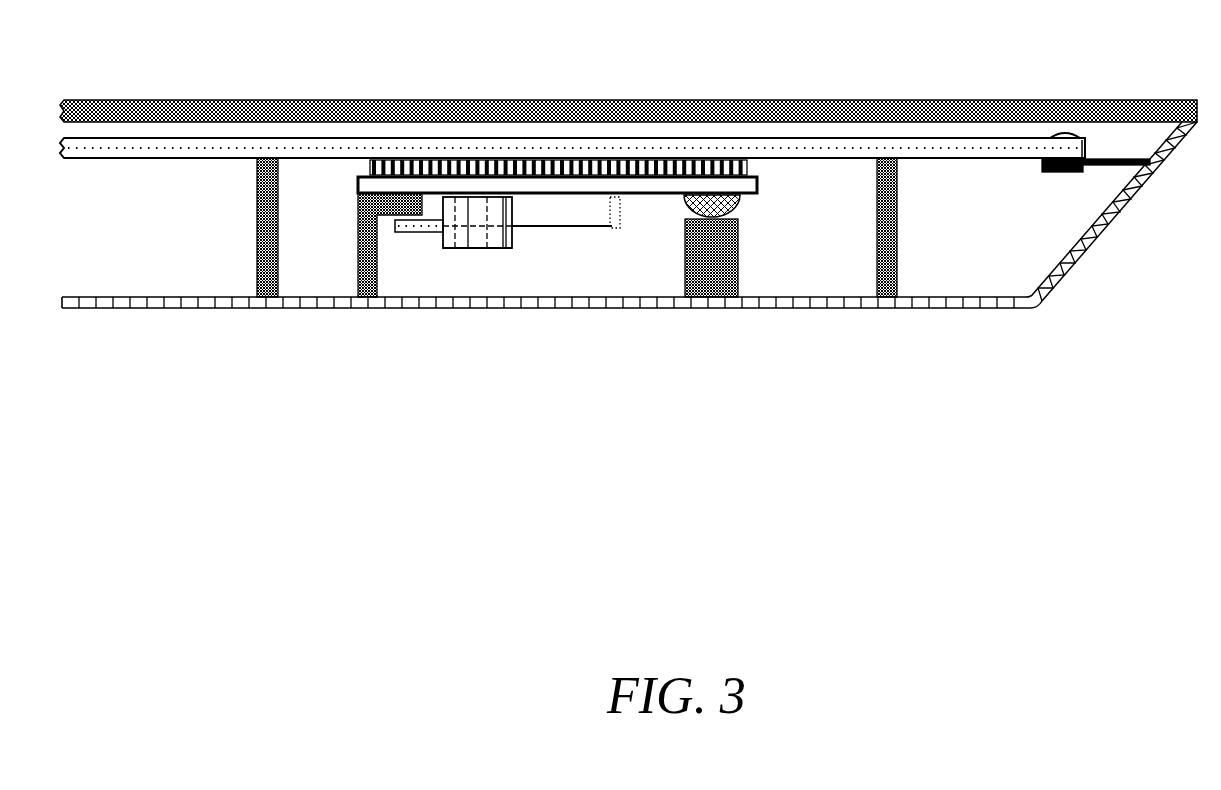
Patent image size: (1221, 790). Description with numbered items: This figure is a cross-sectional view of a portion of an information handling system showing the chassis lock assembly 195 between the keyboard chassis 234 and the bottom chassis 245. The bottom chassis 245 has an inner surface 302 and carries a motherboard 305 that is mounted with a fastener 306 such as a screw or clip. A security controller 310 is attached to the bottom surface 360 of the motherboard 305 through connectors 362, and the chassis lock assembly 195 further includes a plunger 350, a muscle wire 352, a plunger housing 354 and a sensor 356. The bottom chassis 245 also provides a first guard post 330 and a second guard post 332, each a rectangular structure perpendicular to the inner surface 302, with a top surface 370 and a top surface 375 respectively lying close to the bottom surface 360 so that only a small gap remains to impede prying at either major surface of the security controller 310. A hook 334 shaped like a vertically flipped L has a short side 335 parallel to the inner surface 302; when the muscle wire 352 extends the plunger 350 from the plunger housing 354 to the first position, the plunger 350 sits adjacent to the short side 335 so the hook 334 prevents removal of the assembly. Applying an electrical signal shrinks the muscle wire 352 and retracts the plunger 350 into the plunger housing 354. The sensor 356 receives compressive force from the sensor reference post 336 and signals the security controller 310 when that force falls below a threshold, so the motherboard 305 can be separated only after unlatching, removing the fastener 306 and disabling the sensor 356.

The keyboard chassis 234 is at (242, 90).
The bottom chassis 245 is at (193, 322).
The inner surface 302 is at (166, 297).
The bottom surface 360 is at (148, 160).
The motherboard 305 is at (1008, 159).
The fastener 306 is at (1063, 172).
The top surface 370 is at (257, 161).
The first guard post 330 is at (257, 232).
The second guard post 332 is at (898, 232).
The top surface 375 is at (898, 162).
The connectors 362 is at (354, 171).
The security controller 310 is at (758, 187).
The chassis lock assembly 195 is at (347, 203).
The hook 334 is at (358, 285).
The short side 335 is at (383, 218).
The plunger 350 is at (436, 233).
The plunger housing 354 is at (512, 249).
The muscle wire 352 is at (560, 227).
The sensor 356 is at (740, 208).
The sensor reference post 336 is at (739, 296).